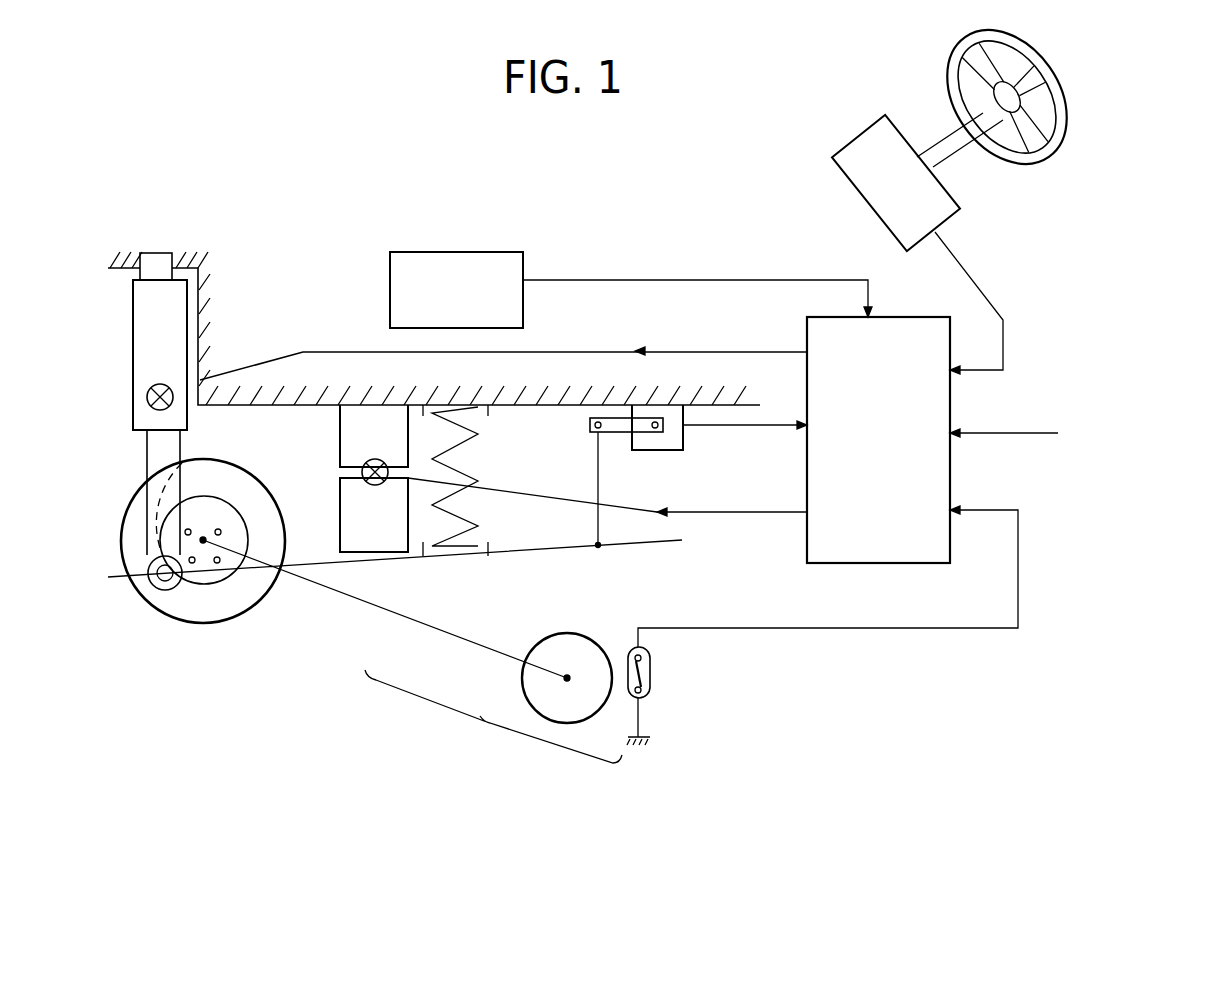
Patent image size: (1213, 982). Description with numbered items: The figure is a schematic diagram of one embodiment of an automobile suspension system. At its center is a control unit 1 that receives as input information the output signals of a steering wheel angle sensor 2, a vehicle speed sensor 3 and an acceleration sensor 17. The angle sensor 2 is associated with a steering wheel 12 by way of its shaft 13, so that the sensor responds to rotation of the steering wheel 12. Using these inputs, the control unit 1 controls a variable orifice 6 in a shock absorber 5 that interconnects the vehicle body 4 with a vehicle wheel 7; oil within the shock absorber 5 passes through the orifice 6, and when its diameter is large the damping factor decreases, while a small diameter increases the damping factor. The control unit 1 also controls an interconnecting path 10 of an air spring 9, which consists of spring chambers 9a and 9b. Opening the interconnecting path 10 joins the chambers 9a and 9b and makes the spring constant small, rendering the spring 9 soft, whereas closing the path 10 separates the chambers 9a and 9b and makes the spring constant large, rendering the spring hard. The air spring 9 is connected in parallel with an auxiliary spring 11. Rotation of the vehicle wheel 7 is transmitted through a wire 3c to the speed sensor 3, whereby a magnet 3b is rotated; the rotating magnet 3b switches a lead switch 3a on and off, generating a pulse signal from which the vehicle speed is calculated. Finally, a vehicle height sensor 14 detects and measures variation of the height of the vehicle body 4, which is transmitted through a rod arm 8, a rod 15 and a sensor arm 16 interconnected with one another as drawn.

The control unit 1 is at (806, 553).
The steering wheel angle sensor 2 is at (846, 183).
The vehicle speed sensor 3 is at (494, 758).
The lead switch 3a is at (652, 668).
The magnet 3b is at (580, 636).
The wire 3c is at (393, 612).
The vehicle body 4 is at (200, 303).
The shock absorber 5 is at (145, 345).
The variable orifice 6 is at (148, 404).
The vehicle wheel 7 is at (192, 610).
The rod arm 8 is at (250, 572).
The air spring 9 is at (336, 478).
The spring chamber 9a is at (340, 444).
The spring chamber 9b is at (353, 515).
The interconnecting path 10 is at (375, 485).
The auxiliary spring 11 is at (470, 440).
The steering wheel 12 is at (1063, 133).
The shaft 13 is at (968, 143).
The vehicle height sensor 14 is at (672, 438).
The rod 15 is at (602, 470).
The sensor arm 16 is at (614, 423).
The acceleration sensor 17 is at (455, 252).